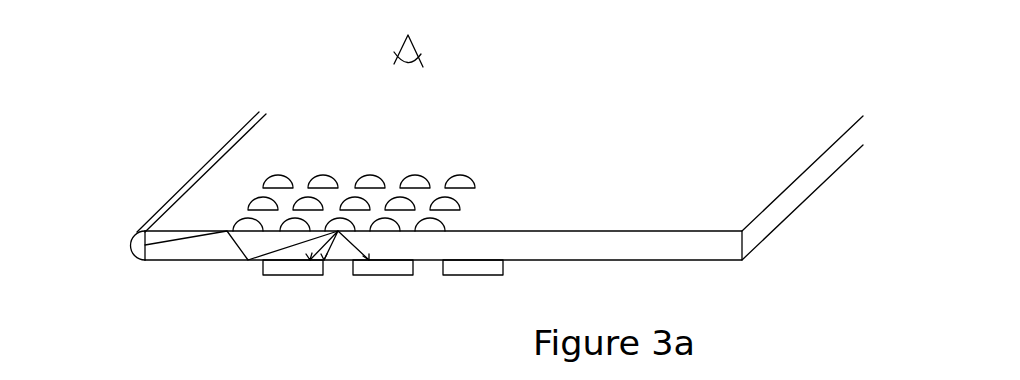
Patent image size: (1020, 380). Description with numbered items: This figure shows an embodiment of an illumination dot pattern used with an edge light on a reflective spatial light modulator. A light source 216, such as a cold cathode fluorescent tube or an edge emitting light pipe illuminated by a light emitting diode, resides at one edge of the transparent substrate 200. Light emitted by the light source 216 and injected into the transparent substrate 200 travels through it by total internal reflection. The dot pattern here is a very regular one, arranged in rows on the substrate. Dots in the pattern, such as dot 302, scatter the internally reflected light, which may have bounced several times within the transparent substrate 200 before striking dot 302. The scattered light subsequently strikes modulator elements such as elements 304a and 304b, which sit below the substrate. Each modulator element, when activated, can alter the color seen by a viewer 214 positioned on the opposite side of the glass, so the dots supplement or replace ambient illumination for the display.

The transparent substrate 200 is at (760, 243).
The light source 216 is at (135, 230).
The viewer 214 is at (393, 60).
The dot 302 is at (338, 231).
The modulator element 304a is at (292, 275).
The modulator element 304b is at (387, 275).